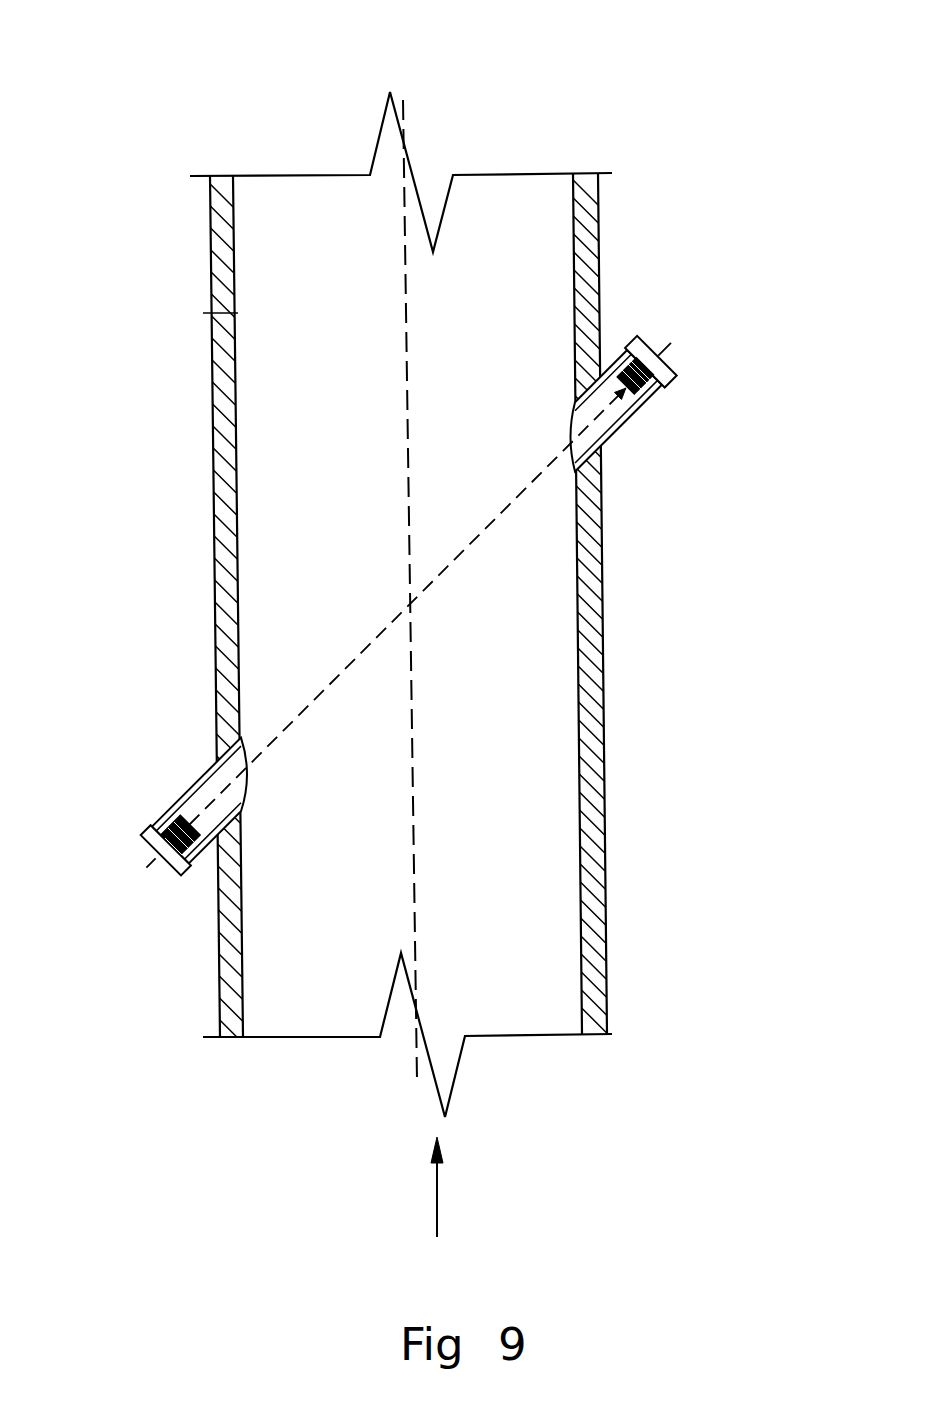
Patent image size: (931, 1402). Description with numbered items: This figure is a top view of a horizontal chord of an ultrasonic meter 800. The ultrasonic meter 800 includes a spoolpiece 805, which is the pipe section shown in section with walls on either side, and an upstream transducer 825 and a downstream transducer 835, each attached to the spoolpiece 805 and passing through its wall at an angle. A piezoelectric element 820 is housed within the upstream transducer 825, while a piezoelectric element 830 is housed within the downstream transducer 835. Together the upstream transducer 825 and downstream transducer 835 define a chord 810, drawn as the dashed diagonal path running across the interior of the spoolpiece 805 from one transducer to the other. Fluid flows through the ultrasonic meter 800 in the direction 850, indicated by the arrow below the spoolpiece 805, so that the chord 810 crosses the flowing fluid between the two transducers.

The ultrasonic meter 800 is at (522, 113).
The spoolpiece 805 is at (213, 502).
The chord 810 is at (447, 570).
The piezoelectric element 820 is at (186, 818).
The upstream transducer 825 is at (193, 777).
The piezoelectric element 830 is at (626, 392).
The downstream transducer 835 is at (622, 347).
The direction 850 is at (437, 1198).